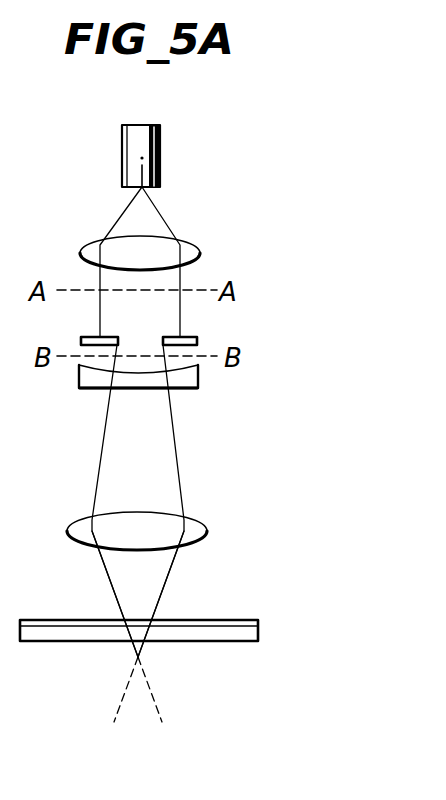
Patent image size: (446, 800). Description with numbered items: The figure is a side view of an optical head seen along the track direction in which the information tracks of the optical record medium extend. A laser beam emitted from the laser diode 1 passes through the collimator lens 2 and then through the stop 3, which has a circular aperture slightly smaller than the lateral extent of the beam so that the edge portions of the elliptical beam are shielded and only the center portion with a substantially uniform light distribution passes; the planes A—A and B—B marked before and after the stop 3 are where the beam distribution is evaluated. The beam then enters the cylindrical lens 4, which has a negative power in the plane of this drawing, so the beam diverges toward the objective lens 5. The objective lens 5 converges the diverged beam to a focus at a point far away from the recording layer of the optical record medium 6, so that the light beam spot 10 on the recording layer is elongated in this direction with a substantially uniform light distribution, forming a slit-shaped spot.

The laser diode 1 is at (160, 147).
The collimator lens 2 is at (200, 250).
The stop 3 is at (197, 337).
The cylindrical lens 4 is at (198, 380).
The objective lens 5 is at (207, 531).
The optical record medium 6 is at (258, 625).
The light beam spot 10 is at (138, 627).